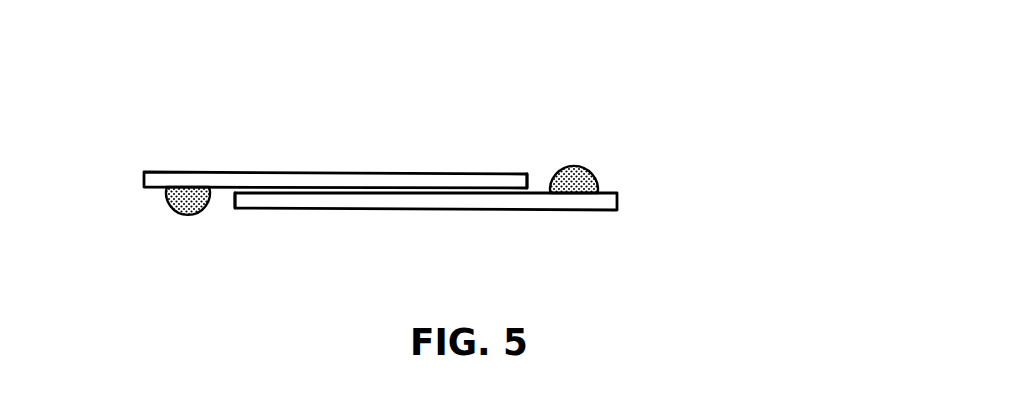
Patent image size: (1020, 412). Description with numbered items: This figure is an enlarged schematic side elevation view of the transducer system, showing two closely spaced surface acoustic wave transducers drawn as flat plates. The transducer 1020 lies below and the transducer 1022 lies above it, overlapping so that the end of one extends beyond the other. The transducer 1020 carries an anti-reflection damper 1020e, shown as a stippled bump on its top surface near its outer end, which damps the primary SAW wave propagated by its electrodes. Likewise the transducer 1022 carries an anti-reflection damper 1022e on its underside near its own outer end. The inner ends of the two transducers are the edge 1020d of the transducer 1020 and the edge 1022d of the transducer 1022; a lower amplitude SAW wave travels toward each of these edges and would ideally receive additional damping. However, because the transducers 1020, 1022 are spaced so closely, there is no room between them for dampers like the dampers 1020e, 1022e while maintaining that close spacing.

The transducer 1022 is at (356, 141).
The edge 1022d is at (538, 105).
The anti-reflection damper 1022e is at (140, 266).
The transducer 1020 is at (582, 245).
The edge 1020d is at (238, 252).
The anti-reflection damper 1020e is at (651, 157).